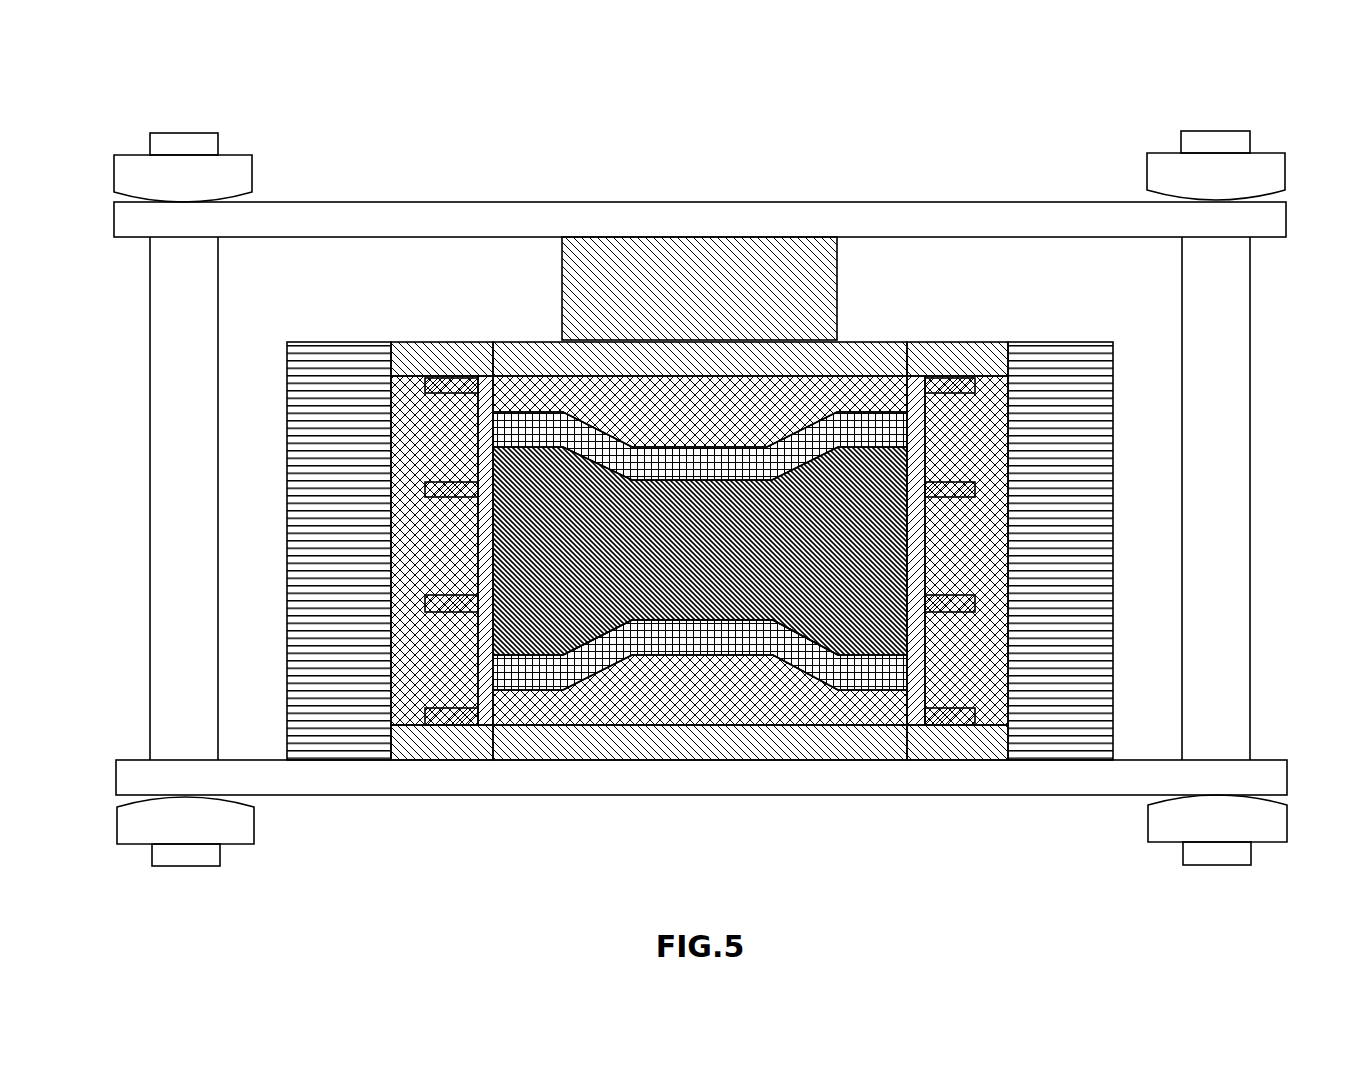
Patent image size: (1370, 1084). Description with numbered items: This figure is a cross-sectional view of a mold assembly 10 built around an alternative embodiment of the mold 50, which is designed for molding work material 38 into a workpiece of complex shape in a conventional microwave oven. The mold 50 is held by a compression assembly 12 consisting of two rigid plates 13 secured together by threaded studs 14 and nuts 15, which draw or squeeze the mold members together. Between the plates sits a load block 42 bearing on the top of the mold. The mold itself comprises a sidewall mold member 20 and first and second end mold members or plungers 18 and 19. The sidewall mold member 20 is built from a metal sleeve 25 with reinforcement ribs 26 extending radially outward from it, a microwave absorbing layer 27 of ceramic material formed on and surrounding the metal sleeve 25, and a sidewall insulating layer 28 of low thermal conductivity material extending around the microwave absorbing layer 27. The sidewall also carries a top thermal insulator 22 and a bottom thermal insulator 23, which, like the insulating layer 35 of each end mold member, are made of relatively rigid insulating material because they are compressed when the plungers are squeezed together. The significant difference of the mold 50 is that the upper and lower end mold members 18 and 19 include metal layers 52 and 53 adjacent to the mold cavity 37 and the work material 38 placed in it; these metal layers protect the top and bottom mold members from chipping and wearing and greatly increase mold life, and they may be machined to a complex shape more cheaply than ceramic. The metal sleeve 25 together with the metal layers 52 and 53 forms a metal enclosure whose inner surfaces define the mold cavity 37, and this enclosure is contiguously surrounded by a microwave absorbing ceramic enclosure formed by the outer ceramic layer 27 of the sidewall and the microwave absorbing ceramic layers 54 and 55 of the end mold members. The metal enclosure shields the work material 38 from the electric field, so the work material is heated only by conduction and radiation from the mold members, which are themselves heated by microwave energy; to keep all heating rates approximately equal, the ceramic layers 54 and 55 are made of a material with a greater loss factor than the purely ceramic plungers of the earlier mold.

The mold assembly 10 is at (653, 165).
The compression assembly 12 is at (1097, 182).
The rigid plates 13 is at (818, 216).
The threaded studs 14 is at (1252, 442).
The nuts 15 is at (142, 175).
The first end mold member 18 is at (552, 328).
The second end mold member 19 is at (582, 765).
The sidewall mold member 20 is at (397, 320).
The top thermal insulator 22 is at (415, 343).
The bottom thermal insulator 23 is at (450, 742).
The metal sleeve 25 is at (485, 405).
The reinforcement ribs 26 is at (450, 380).
The microwave absorbing layer 27 is at (977, 440).
The sidewall insulating layer 28 is at (342, 708).
The insulating layer 35 is at (876, 352).
The mold cavity 37 is at (693, 615).
The work material 38 is at (855, 590).
The load block 42 is at (690, 268).
The mold 50 is at (353, 320).
The metal layer 52 is at (528, 423).
The metal layer 53 is at (803, 658).
The microwave absorbing ceramic layer 54 is at (838, 388).
The microwave absorbing ceramic layer 55 is at (672, 693).